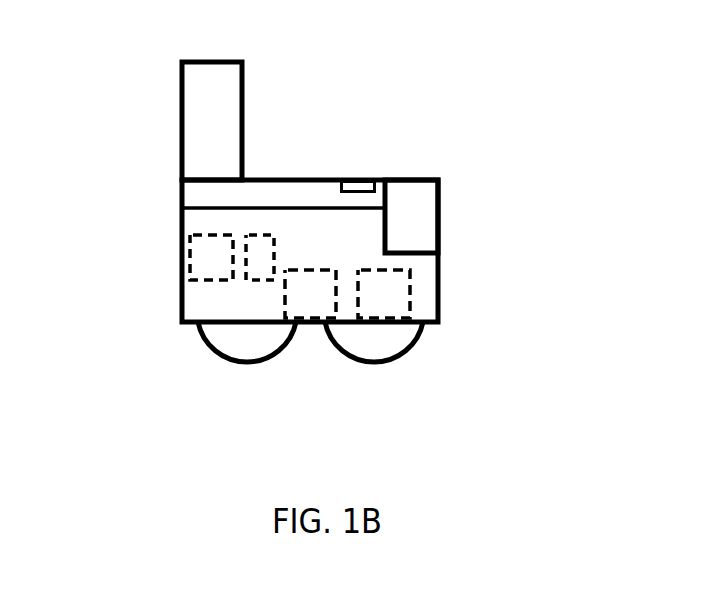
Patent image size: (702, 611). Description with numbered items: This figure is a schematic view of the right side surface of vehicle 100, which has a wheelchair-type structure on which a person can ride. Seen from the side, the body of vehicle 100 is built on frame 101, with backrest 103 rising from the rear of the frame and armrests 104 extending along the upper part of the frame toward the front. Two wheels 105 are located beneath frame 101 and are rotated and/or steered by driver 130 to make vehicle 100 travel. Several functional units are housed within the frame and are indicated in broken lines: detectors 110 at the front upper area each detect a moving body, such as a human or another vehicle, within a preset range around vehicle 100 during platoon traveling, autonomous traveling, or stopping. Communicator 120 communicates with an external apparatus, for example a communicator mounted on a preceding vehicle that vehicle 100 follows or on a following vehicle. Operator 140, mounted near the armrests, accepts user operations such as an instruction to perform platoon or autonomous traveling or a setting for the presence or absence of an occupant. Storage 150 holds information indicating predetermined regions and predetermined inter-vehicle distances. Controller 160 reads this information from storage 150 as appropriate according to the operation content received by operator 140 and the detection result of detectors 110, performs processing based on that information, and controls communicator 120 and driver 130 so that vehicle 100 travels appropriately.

The vehicle 100 is at (326, 34).
The frame 101 is at (182, 301).
The backrest 103 is at (180, 100).
The armrests 104 is at (265, 180).
The wheels 105 is at (373, 358).
The detectors 110 is at (412, 180).
The communicator 120 is at (413, 282).
The driver 130 is at (298, 268).
The operator 140 is at (357, 180).
The storage 150 is at (252, 282).
The controller 160 is at (190, 248).